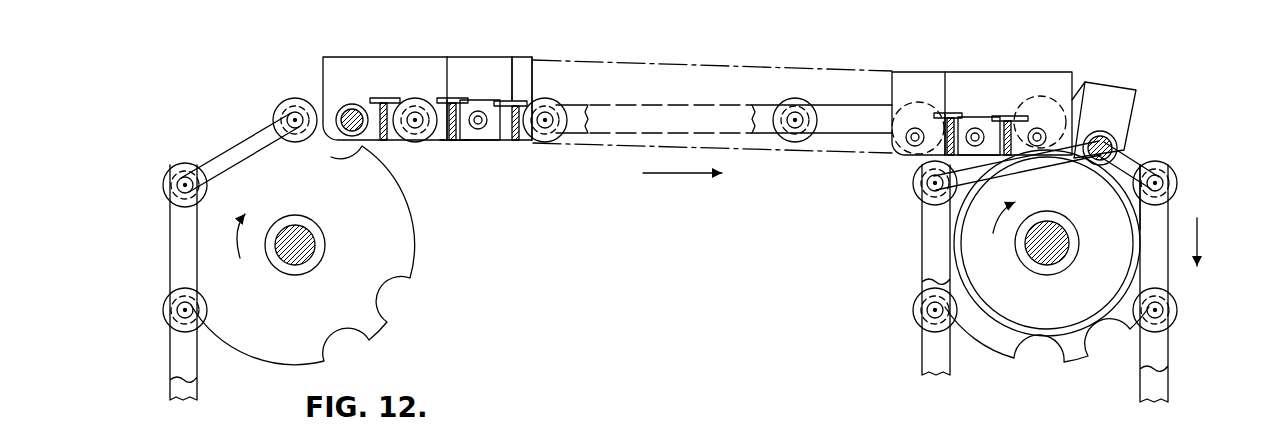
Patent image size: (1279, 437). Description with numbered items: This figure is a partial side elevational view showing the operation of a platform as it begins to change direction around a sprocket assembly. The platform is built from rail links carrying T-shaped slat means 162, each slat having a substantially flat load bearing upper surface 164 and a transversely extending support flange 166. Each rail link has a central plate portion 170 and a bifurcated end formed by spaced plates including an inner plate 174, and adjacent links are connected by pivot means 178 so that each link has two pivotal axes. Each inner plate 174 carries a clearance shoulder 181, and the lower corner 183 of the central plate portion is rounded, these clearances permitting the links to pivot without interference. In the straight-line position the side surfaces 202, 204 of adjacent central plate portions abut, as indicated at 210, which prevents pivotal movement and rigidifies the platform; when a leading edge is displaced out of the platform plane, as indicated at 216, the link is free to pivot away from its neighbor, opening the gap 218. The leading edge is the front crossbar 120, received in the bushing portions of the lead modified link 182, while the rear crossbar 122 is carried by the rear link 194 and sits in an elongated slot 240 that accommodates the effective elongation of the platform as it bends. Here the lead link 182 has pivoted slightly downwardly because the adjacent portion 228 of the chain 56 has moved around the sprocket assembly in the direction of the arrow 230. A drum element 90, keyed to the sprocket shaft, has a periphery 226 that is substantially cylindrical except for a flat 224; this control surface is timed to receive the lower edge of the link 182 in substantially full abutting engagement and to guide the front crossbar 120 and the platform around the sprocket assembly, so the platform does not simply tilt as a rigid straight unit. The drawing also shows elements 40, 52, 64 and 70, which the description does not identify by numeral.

The conveyor band 40 is at (893, 166).
The left guide track 52 is at (162, 350).
The chain 56 is at (916, 358).
The drive shaft 64 is at (1047, 265).
The sprocket wheel 70 is at (318, 258).
The drum element 90 is at (1010, 333).
The front crossbar 120 is at (1125, 130).
The rear crossbar 122 is at (333, 152).
The slat means 162 is at (503, 143).
The load bearing upper surface 164 is at (502, 100).
The support flange 166 is at (503, 123).
The central plate portion 170 is at (523, 80).
The inner plate 174 is at (460, 146).
The pivot means 178 is at (462, 100).
The clearance shoulder 181 is at (471, 98).
The modified link 182 is at (1138, 97).
The lower corner 183 is at (462, 143).
The rear link 194 is at (323, 70).
The side surface 202 is at (1080, 80).
The side surface 204 is at (1083, 80).
The abutting engagement 210 is at (512, 84).
The displaced leading edge position 216 is at (1128, 147).
The gap 218 is at (1120, 106).
The flat 224 is at (1070, 175).
The periphery 226 is at (1088, 355).
The adjacent portion of the chain 228 is at (1157, 228).
The arrow 230 is at (1200, 237).
The elongated slot 240 is at (350, 108).